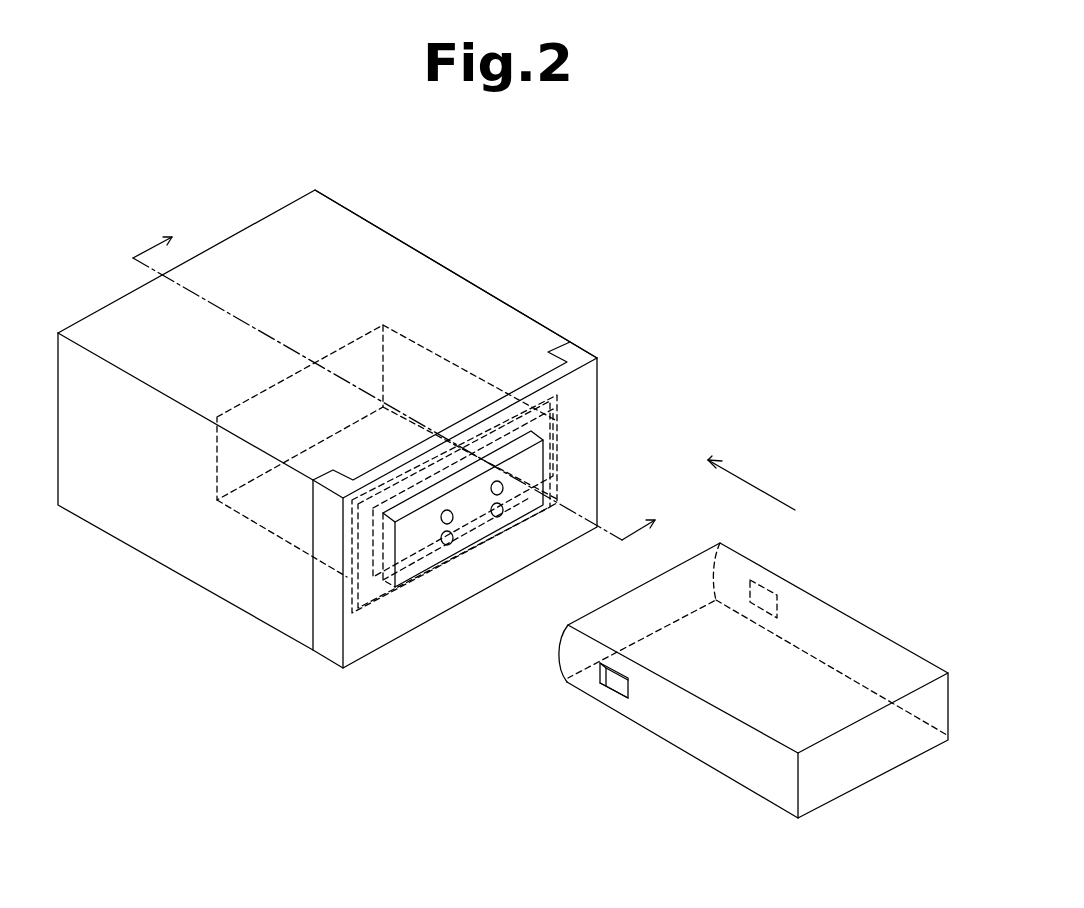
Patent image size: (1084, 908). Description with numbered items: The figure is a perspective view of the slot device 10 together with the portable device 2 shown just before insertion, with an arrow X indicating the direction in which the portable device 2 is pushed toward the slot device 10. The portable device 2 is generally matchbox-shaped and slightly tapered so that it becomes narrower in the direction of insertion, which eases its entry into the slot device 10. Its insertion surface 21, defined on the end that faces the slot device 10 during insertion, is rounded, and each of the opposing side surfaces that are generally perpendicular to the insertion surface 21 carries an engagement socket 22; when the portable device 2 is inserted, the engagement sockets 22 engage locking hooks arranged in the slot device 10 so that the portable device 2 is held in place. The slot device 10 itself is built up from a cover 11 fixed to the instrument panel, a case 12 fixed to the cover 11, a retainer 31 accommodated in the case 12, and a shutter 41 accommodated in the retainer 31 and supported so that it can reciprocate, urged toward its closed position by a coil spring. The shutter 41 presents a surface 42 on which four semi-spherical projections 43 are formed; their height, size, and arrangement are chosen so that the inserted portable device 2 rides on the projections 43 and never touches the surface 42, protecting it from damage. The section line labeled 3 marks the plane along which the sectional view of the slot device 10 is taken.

The portable device 2 is at (888, 608).
The section line III-III 3 is at (406, 375).
The slot device 10 is at (507, 235).
The cover 11 is at (598, 373).
The case 12 is at (368, 232).
The insertion surface 21 is at (562, 655).
The engagement socket 22 is at (612, 682).
The retainer 31 is at (323, 357).
The shutter 41 is at (545, 470).
The surface 42 is at (408, 568).
The semi-spherical projections 43 is at (497, 517).
The insertion direction X is at (757, 483).